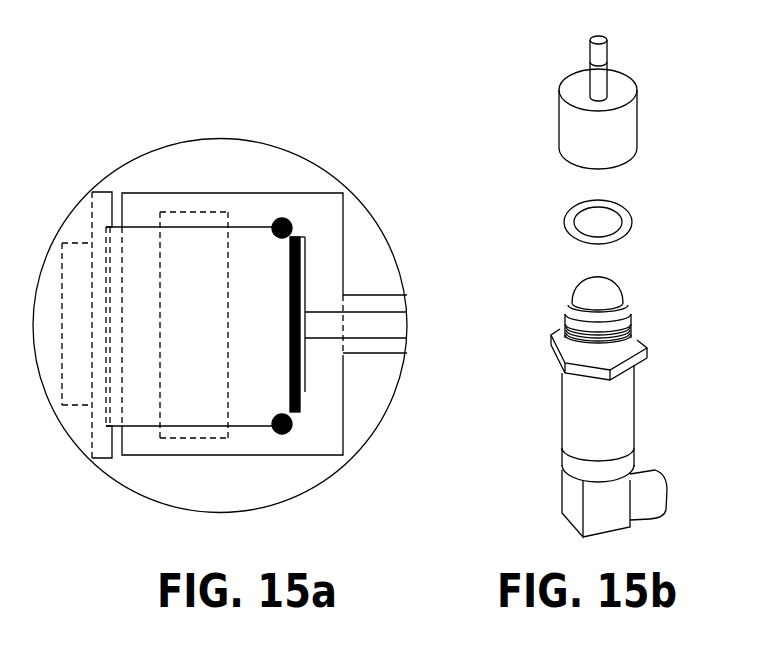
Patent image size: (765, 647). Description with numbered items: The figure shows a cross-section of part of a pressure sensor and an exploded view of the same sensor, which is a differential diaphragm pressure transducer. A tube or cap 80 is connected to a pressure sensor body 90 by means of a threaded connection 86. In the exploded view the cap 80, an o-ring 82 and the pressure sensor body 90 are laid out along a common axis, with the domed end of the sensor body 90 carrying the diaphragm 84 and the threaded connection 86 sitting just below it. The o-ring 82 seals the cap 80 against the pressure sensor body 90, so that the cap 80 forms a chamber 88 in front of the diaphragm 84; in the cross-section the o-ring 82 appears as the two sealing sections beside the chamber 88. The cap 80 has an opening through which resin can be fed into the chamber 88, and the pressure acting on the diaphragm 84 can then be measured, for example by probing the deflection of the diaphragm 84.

In FIG. 15A, the cap 80 is at (317, 218).
In FIG. 15B, the cap 80 is at (572, 130).
In FIG. 15A, the o-ring 82 is at (292, 228).
In FIG. 15B, the o-ring 82 is at (563, 217).
In FIG. 15A, the diaphragm 84 is at (298, 285).
In FIG. 15B, the diaphragm 84 is at (598, 285).
In FIG. 15B, the threaded connection 86 is at (633, 318).
In FIG. 15A, the chamber 88 is at (302, 392).
In FIG. 15B, the pressure sensor body 90 is at (628, 388).